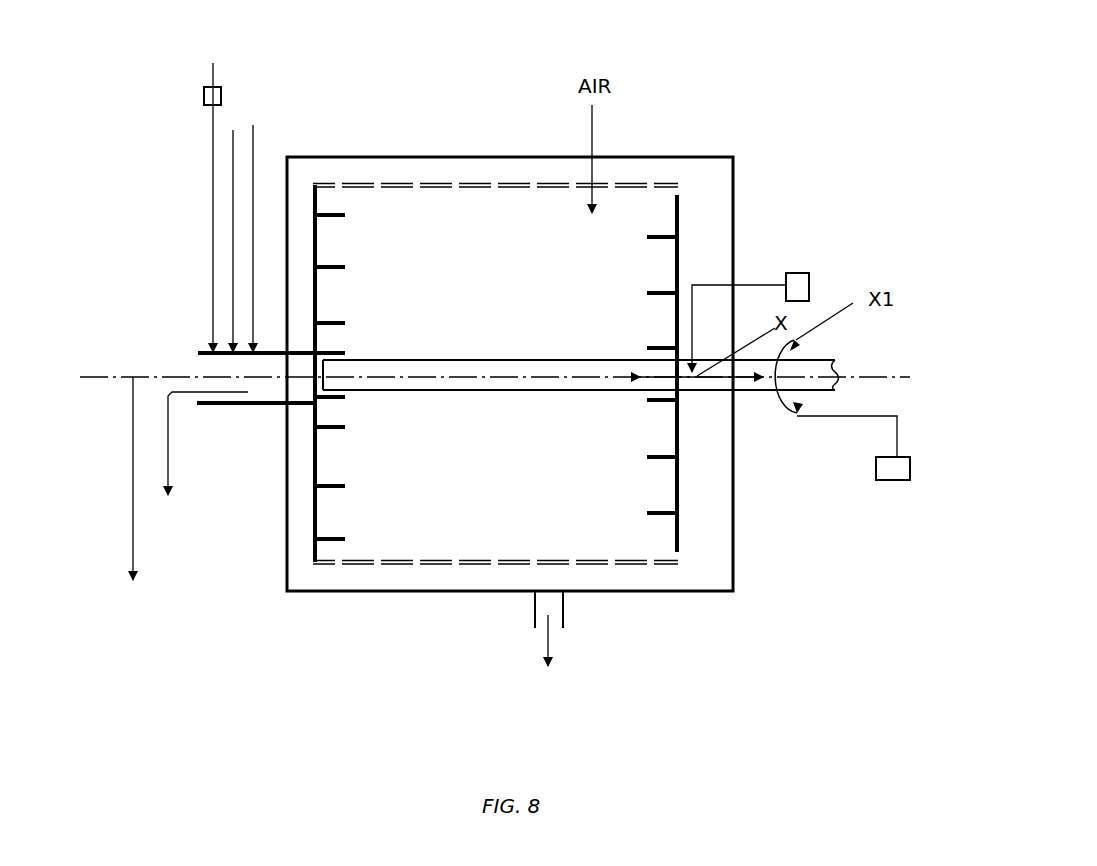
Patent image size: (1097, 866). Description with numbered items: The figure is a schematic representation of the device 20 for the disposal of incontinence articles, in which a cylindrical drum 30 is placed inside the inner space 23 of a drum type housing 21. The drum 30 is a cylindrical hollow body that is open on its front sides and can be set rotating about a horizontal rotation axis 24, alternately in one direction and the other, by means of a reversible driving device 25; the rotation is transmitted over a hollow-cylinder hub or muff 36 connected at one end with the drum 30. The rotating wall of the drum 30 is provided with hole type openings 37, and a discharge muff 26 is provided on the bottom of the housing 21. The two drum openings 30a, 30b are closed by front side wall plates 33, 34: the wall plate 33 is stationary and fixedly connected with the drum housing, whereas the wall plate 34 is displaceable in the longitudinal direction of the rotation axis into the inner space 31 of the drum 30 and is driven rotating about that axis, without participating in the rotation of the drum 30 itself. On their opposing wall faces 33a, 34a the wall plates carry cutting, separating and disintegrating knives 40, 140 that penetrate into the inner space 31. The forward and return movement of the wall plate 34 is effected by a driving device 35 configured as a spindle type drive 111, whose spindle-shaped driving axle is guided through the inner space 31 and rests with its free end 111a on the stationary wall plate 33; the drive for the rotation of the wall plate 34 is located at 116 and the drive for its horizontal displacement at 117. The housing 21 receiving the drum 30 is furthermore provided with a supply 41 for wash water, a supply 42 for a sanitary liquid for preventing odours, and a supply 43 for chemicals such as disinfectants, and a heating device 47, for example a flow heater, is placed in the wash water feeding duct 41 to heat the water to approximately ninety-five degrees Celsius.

The device 20 is at (702, 155).
The drum type housing 21 is at (476, 156).
The inner space of the drum type housing 23 is at (522, 172).
The horizontal rotation axis 24 is at (96, 376).
The driving device 25 is at (133, 496).
The discharge muff 26 is at (549, 647).
The cylindrical drum 30 is at (384, 181).
The drum opening 30a is at (330, 442).
The drum opening 30b is at (410, 567).
The inner space of the drum 31 is at (486, 290).
The wall plate 33 is at (313, 518).
The wall face 33a is at (318, 472).
The wall plate 34 is at (678, 268).
The wall face 34a is at (677, 486).
The driving device 35 is at (712, 384).
The muff 36 is at (250, 405).
The hole type openings 37 is at (378, 567).
The cutting, separating and disintegrating knives 40 is at (333, 320).
The supply for wash water 41 is at (213, 142).
The supply for sanitary liquid 42 is at (233, 135).
The supply for chemicals 43 is at (253, 155).
The heating device 47 is at (221, 86).
The spindle type drive 111 is at (516, 379).
The free end 111a is at (360, 379).
The drive for the rotation of the wall plate 116 is at (808, 288).
The drive for the horizontal displacement 117 is at (876, 471).
The cutting, separating and disintegrating knives 140 is at (660, 294).